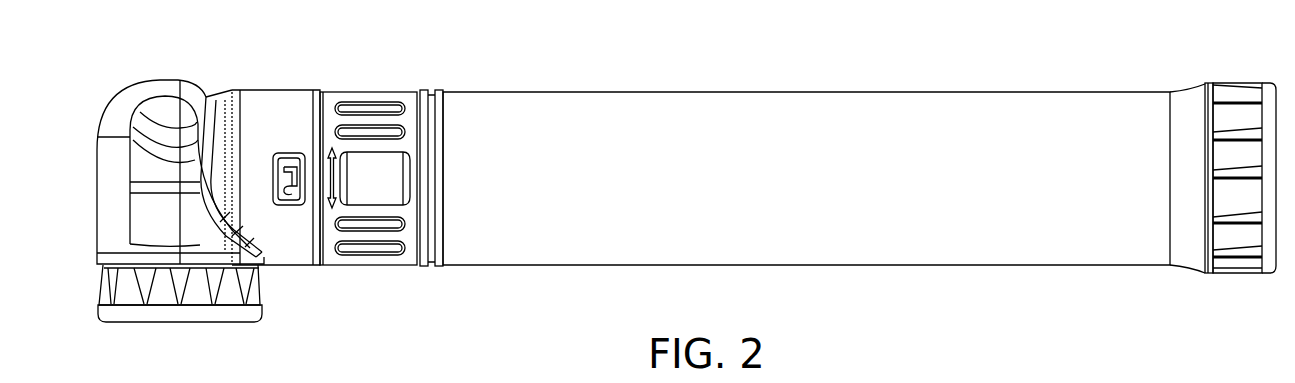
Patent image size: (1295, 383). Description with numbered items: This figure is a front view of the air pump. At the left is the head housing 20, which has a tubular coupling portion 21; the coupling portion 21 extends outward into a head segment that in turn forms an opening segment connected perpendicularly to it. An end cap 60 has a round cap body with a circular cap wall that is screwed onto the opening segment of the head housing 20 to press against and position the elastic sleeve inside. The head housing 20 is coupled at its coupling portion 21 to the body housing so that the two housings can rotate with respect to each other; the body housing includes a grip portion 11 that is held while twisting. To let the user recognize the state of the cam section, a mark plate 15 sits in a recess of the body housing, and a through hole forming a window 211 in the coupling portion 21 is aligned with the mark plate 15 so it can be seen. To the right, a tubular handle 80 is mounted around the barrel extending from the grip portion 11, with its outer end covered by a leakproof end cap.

The head housing 20 is at (107, 112).
The end cap 60 is at (110, 286).
The coupling portion 21 is at (278, 95).
The window 211 is at (283, 153).
The mark plate 15 is at (291, 195).
The grip portion 11 is at (370, 94).
The handle 80 is at (660, 115).